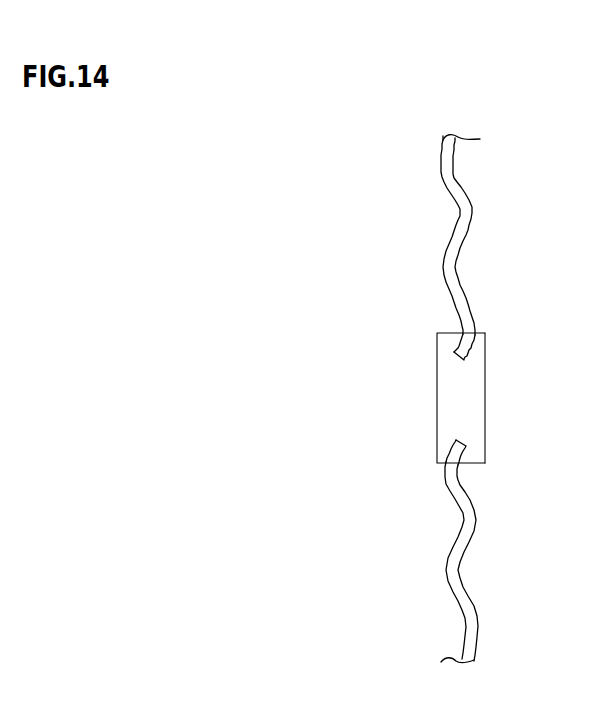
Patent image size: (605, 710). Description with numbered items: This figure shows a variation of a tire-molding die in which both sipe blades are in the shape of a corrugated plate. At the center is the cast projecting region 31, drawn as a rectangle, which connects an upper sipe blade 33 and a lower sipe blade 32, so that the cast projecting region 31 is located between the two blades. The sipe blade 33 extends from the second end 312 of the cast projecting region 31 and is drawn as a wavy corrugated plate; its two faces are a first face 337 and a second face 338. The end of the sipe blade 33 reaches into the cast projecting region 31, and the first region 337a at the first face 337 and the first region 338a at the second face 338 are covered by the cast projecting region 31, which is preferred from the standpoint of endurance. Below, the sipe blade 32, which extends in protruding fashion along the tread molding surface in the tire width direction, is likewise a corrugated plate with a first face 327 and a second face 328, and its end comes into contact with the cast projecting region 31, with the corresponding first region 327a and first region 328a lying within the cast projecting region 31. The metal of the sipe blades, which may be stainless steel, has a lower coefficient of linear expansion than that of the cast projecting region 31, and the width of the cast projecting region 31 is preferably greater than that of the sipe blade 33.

The sipe blade 33 is at (472, 247).
The first face 337 is at (455, 205).
The second face 338 is at (475, 205).
The first region 337a is at (455, 338).
The first region 338a is at (472, 340).
The cast projecting region 31 is at (493, 398).
The second end 312 is at (478, 350).
The sipe blade 32 is at (457, 547).
The first face 327 is at (467, 515).
The second face 328 is at (478, 510).
The first region 327a is at (452, 453).
The first region 328a is at (468, 455).